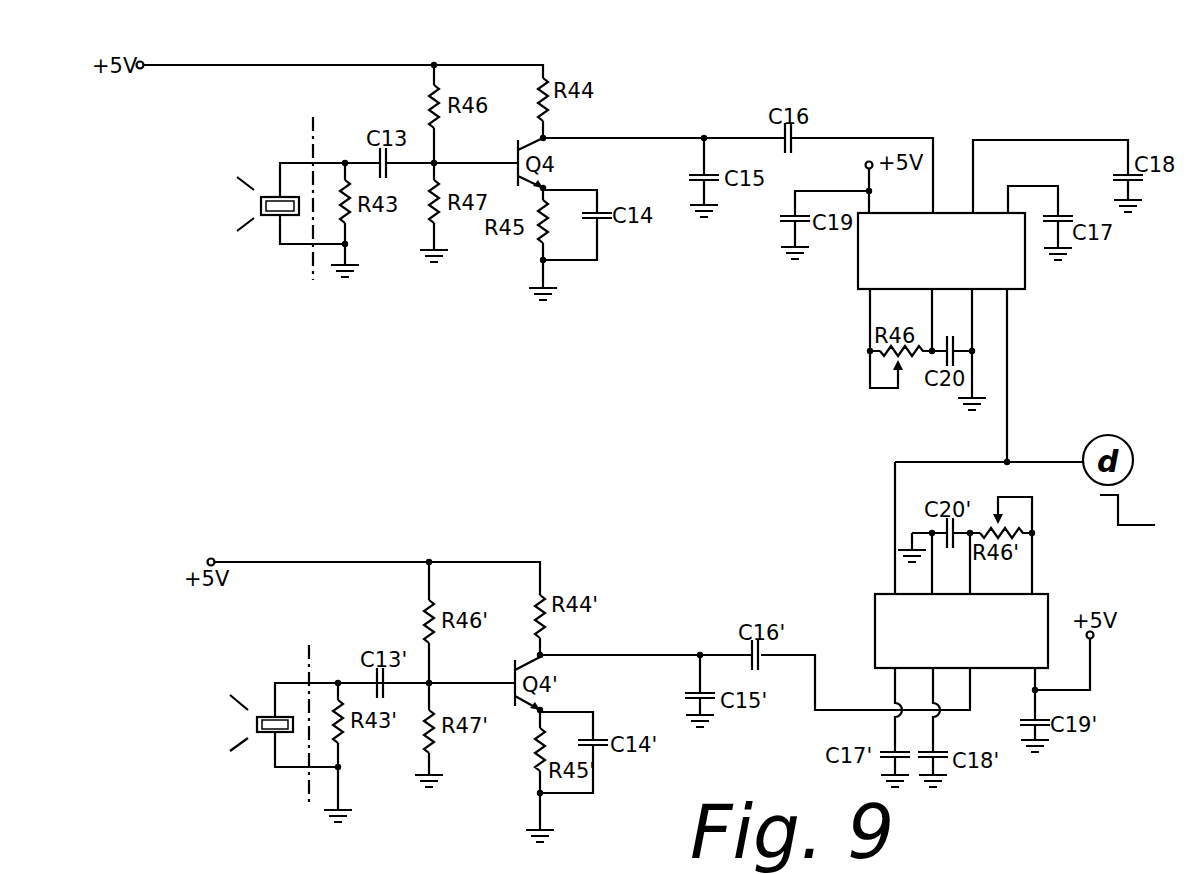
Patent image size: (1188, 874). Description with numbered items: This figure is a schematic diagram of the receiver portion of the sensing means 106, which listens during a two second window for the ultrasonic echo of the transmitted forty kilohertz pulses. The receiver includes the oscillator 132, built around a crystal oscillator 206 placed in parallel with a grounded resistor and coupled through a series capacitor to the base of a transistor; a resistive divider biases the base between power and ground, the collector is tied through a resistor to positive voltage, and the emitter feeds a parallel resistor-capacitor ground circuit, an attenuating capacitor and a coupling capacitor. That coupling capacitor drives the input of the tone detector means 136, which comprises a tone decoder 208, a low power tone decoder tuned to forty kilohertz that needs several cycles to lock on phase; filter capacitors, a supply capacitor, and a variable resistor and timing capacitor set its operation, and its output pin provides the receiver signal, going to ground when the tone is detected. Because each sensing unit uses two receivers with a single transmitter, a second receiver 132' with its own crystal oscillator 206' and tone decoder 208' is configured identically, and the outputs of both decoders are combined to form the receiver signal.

The crystal oscillator 206 is at (256, 173).
The receiver oscillator means 132 is at (251, 223).
The sensing means 106 is at (828, 133).
The tone detector means 136 is at (947, 137).
The tone decoder 208 is at (885, 276).
The second tone decoder 208' is at (908, 603).
The second receiver 132' is at (217, 725).
The second crystal oscillator 206' is at (245, 750).